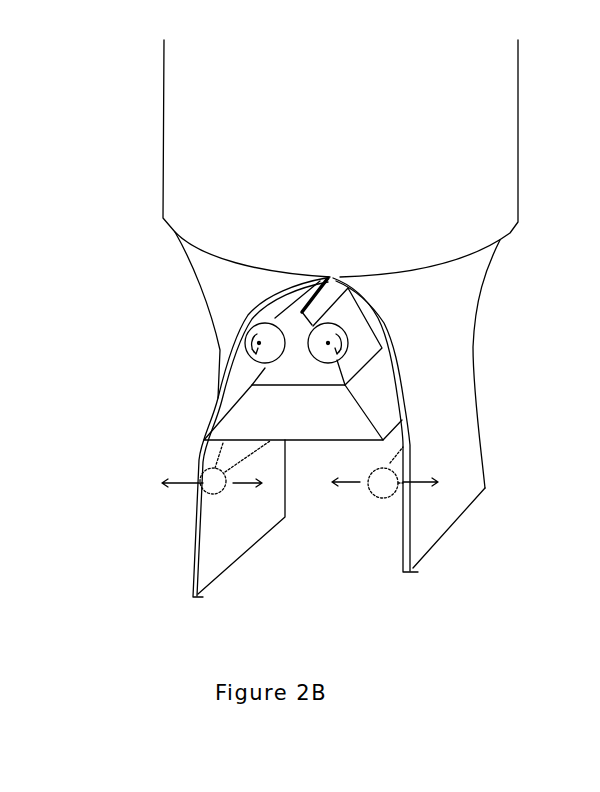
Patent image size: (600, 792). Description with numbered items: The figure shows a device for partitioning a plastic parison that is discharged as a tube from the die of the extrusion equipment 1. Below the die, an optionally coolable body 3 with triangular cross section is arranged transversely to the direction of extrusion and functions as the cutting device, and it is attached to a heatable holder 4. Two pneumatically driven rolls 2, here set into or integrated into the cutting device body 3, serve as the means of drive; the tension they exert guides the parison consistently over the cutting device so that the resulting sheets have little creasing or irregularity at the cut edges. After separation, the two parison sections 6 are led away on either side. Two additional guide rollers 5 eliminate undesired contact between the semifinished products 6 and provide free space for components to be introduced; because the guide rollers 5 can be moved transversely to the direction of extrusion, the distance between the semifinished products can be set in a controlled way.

The extrusion equipment 1 is at (200, 174).
The driven rolls 2 is at (250, 331).
The body 3 is at (278, 367).
The heatable holder 4 is at (213, 434).
The guide rollers 5 is at (203, 488).
The parison sections 6 is at (217, 552).